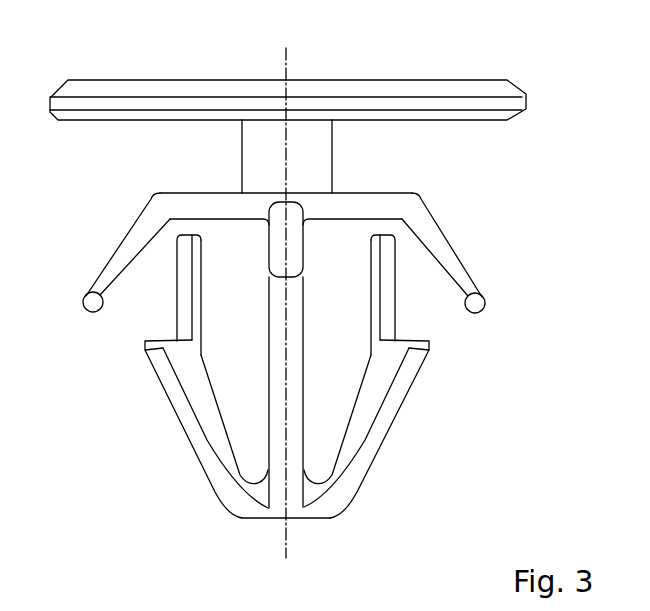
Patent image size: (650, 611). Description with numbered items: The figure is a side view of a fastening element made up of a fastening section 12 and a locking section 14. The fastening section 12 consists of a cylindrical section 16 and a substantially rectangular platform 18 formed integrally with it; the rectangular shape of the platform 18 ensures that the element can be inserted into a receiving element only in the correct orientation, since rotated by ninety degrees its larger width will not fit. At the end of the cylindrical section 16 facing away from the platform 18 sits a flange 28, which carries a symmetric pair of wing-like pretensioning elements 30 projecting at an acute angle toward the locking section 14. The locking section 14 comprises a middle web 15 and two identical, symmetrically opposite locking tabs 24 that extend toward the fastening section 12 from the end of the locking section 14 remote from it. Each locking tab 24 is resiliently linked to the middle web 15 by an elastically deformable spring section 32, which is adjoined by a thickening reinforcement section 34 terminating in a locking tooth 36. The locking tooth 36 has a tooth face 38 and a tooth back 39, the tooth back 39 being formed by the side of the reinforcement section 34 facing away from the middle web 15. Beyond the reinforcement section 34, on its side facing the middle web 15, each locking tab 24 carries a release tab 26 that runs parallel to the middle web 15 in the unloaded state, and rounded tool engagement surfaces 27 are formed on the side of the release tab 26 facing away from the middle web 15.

The fastening section 12 is at (176, 154).
The locking section 14 is at (92, 462).
The middle web 15 is at (300, 318).
The cylindrical section 16 is at (313, 148).
The platform 18 is at (157, 88).
The locking tab 24 is at (210, 465).
The release tab 26 is at (183, 272).
The tool engagement surface 27 is at (185, 313).
The flange 28 is at (392, 205).
The pretensioning element 30 is at (127, 262).
The spring section 32 is at (233, 505).
The reinforcement section 34 is at (200, 432).
The locking tooth 36 is at (165, 373).
The tooth face 38 is at (160, 343).
The tooth back 39 is at (172, 408).